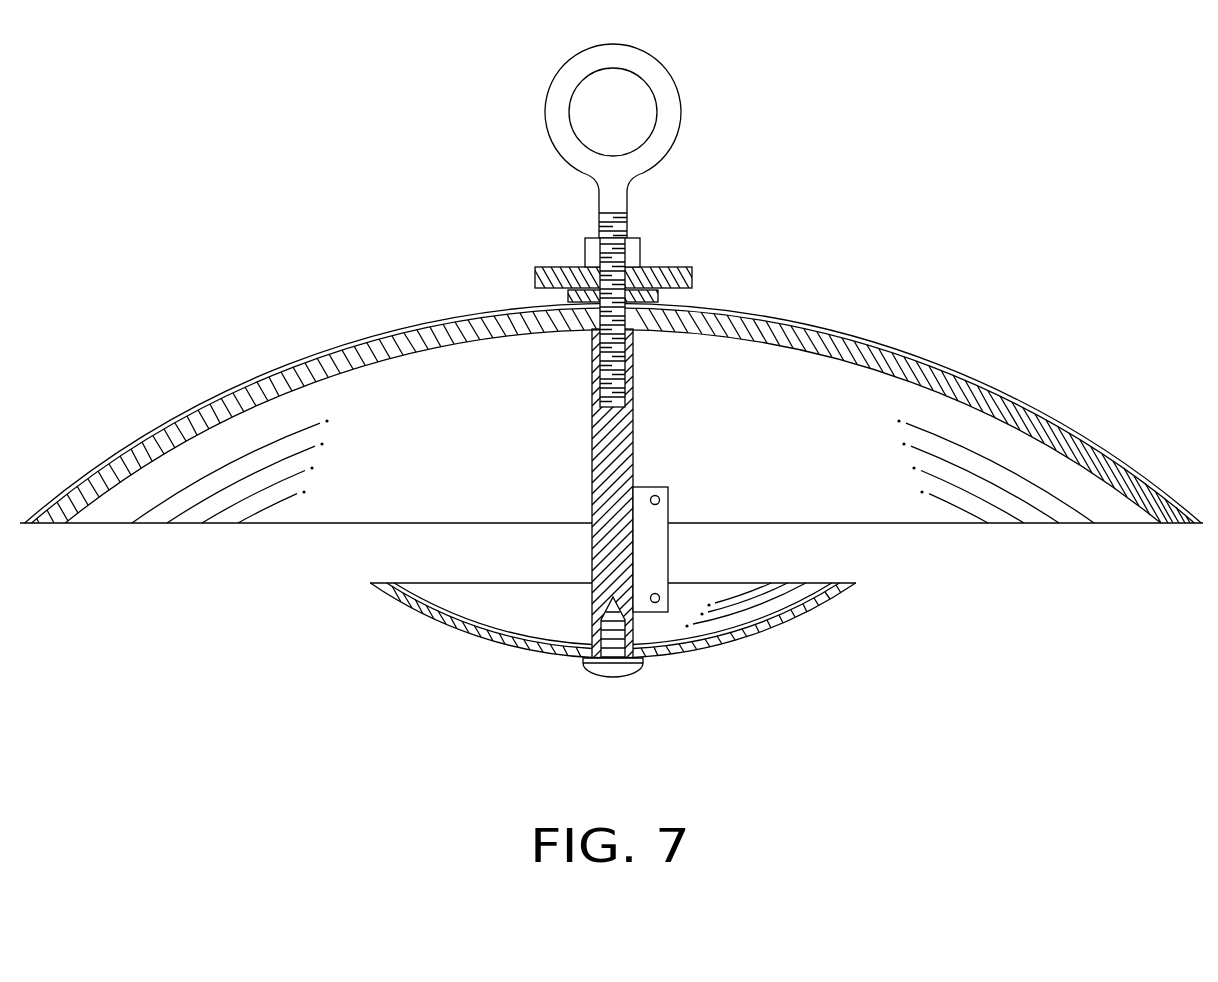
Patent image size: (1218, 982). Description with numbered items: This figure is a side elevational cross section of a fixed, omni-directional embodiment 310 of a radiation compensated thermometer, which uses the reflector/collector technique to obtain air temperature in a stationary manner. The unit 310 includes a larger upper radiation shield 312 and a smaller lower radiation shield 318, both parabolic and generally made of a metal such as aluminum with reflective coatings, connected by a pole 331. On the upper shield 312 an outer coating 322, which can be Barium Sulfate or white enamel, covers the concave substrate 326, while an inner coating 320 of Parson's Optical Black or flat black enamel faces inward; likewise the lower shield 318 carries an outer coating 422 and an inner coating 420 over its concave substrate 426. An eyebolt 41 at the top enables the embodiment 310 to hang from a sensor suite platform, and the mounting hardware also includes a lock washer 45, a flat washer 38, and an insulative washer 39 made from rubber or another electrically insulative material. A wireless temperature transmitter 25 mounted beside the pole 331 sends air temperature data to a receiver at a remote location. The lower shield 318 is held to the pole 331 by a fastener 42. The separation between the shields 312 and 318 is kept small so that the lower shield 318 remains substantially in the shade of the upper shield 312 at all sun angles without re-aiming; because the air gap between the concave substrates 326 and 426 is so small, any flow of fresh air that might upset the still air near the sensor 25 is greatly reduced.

The fixed, omni-directional embodiment 310 is at (288, 202).
The upper radiation shield 312 is at (285, 302).
The lower radiation shield 318 is at (428, 664).
The inner coating 320 is at (325, 385).
The outer coating 322 is at (243, 392).
The concave substrate 326 is at (187, 433).
The inner coating 420 is at (466, 611).
The outer coating 422 is at (532, 650).
The concave substrate 426 is at (777, 612).
The eyebolt 41 is at (675, 83).
The lock washer 45 is at (638, 240).
The flat washer 38 is at (675, 266).
The insulative washer 39 is at (568, 298).
The pole 331 is at (620, 455).
The wireless temperature transmitter 25 is at (656, 557).
The fastener 42 is at (638, 665).